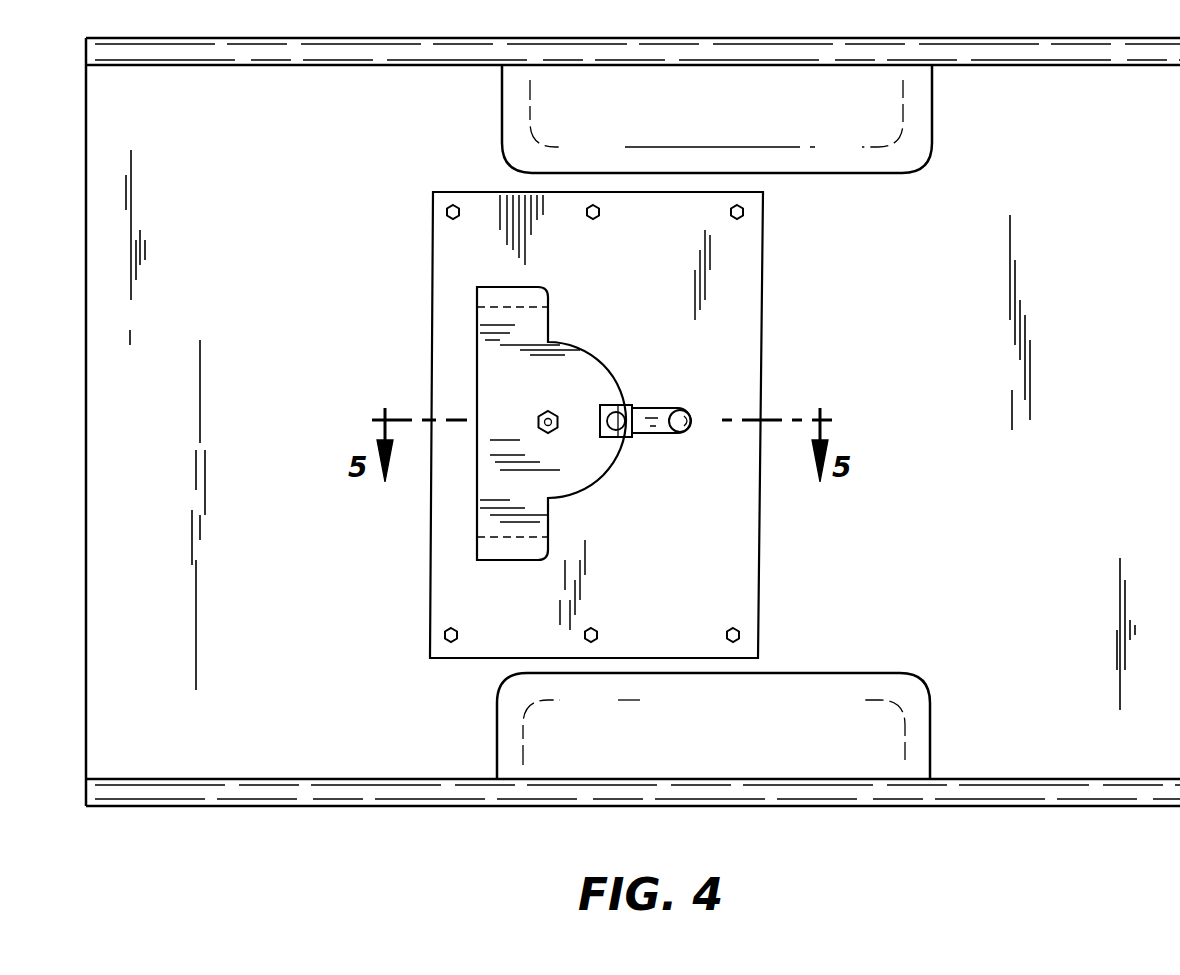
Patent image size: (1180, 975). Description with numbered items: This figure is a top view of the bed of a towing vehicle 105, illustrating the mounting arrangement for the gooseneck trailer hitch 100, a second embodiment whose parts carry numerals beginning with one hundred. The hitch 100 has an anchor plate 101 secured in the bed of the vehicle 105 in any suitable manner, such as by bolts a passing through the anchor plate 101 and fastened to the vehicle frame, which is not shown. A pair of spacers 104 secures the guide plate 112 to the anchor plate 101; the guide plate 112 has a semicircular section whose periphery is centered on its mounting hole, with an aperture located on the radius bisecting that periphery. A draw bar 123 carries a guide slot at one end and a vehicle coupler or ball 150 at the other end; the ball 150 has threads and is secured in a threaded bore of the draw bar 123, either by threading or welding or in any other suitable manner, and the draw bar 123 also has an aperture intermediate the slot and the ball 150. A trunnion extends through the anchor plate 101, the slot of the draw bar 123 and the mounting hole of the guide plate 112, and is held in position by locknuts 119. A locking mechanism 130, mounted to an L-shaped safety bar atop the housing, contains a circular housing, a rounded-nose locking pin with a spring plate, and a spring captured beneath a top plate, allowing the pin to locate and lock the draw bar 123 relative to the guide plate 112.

The gooseneck trailer hitch 100 is at (539, 427).
The anchor plate 101 is at (738, 275).
The spacers 104 is at (478, 306).
The towing vehicle 105 is at (1022, 541).
The guide plate 112 is at (563, 352).
The locknuts 119 is at (539, 419).
The draw bar 123 is at (653, 415).
The locking mechanism 130 is at (631, 443).
The ball 150 is at (683, 410).
The bolts a is at (447, 212).